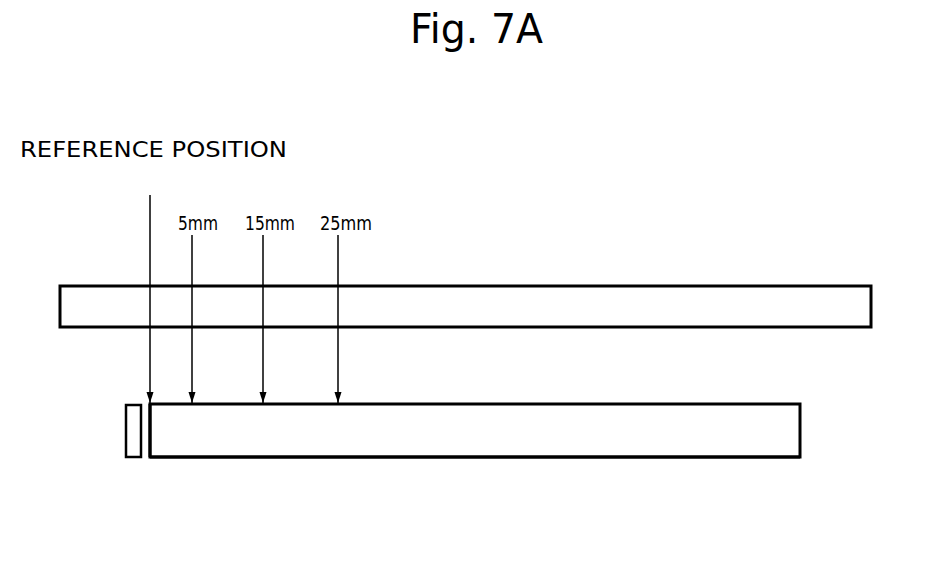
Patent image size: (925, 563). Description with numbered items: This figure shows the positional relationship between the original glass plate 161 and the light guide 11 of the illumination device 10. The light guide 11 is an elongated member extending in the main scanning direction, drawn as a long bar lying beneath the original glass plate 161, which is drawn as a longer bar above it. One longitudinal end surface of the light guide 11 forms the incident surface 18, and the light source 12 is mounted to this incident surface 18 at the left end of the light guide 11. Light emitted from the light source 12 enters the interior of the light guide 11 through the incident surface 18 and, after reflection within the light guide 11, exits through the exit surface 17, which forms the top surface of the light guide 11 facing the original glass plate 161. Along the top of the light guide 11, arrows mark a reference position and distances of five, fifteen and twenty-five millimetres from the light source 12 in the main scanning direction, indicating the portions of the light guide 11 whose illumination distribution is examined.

The illumination device 10 is at (441, 452).
The light guide 11 is at (188, 460).
The light source 12 is at (133, 422).
The exit surface 17 is at (500, 405).
The incident surface 18 is at (150, 434).
The original glass plate 161 is at (740, 286).